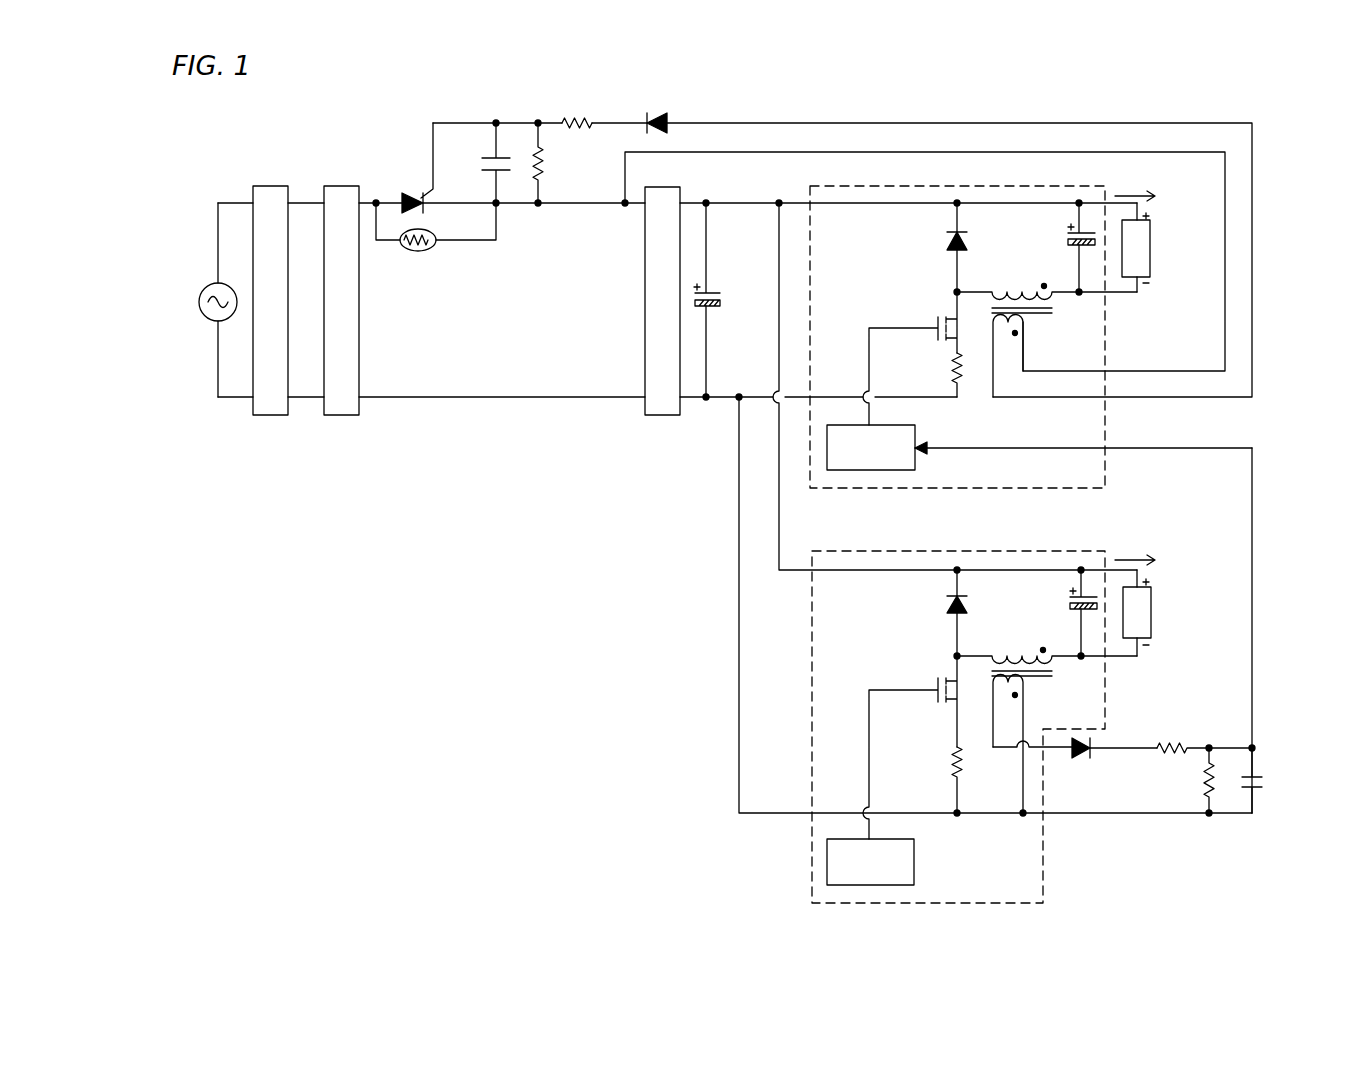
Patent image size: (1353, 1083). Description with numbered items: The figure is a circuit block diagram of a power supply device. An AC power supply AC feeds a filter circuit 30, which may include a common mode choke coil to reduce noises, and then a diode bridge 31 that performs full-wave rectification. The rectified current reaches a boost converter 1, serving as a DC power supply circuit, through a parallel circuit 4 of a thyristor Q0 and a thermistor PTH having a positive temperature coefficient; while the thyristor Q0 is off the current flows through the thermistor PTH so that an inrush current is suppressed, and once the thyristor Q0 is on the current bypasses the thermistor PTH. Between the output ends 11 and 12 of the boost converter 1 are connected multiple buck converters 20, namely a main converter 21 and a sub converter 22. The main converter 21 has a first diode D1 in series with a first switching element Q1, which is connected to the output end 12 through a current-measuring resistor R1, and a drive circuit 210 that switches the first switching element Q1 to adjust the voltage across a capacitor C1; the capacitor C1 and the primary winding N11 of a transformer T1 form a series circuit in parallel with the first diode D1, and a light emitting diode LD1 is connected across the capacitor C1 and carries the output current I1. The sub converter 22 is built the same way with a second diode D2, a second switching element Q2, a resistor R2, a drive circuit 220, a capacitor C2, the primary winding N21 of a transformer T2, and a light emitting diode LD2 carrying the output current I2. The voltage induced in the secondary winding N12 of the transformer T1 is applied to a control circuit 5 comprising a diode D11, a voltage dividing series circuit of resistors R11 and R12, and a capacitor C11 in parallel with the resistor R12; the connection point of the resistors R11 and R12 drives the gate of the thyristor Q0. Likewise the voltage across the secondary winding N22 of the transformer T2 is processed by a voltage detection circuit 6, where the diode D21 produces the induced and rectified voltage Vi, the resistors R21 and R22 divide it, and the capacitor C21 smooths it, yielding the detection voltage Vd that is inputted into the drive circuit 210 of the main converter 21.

The boost converter 1 is at (650, 316).
The parallel circuit 4 is at (436, 210).
The control circuit 5 is at (842, 238).
The voltage detection circuit 6 is at (1190, 632).
The output end 11 is at (686, 203).
The output end 12 is at (682, 402).
The buck converters 20 is at (988, 529).
The main converter 21 is at (808, 197).
The sub converter 22 is at (836, 548).
The filter circuit 30 is at (278, 413).
The diode bridge 31 is at (349, 413).
The drive circuit 210 is at (915, 462).
The drive circuit 220 is at (914, 858).
The AC power supply AC is at (208, 300).
The thyristor Q0 is at (411, 168).
The thermistor PTH is at (463, 222).
The capacitor C11 is at (473, 163).
The resistor R11 is at (579, 105).
The resistor R12 is at (567, 163).
The diode D11 is at (659, 108).
The first diode D1 is at (941, 247).
The first switching element Q1 is at (910, 357).
The resistor R1 is at (940, 375).
The transformer T1 is at (1047, 328).
The primary winding N11 is at (1047, 279).
The secondary winding N12 is at (1037, 356).
The capacitor C1 is at (1064, 247).
The light emitting diode LD1 is at (1150, 246).
The output current I1 is at (1135, 181).
The second diode D2 is at (941, 613).
The second switching element Q2 is at (910, 745).
The resistor R2 is at (939, 780).
The transformer T2 is at (1047, 718).
The primary winding N21 is at (1047, 643).
The secondary winding N22 is at (1037, 744).
The capacitor C2 is at (1065, 613).
The light emitting diode LD2 is at (1151, 608).
The output current I2 is at (1135, 545).
The diode D21 is at (1107, 765).
The resistor R21 is at (1200, 734).
The resistor R22 is at (1181, 780).
The capacitor C21 is at (1282, 780).
The induced and rectified voltage Vi is at (1120, 730).
The detection voltage Vd is at (1280, 746).